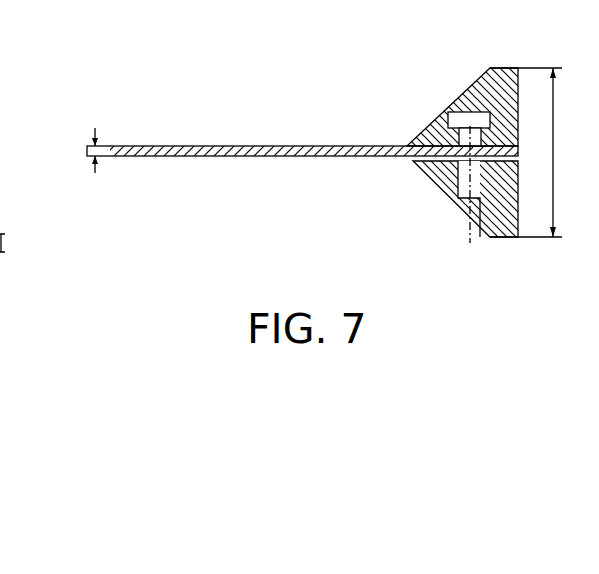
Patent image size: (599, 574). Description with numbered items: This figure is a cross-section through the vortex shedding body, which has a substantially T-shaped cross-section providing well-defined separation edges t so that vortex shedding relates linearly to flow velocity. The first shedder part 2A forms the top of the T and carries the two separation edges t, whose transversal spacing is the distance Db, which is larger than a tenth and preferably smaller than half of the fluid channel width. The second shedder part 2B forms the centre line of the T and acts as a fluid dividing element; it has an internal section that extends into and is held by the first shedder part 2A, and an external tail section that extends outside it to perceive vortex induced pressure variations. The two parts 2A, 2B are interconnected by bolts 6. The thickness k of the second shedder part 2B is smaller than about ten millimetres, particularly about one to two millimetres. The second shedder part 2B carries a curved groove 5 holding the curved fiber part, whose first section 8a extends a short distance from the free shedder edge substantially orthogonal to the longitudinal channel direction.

The first shedder part 2A is at (497, 238).
The second shedder part 2B is at (247, 157).
The curved groove 5 is at (302, 121).
The first section of the curved fiber part 8a is at (146, 148).
The bolt 6 is at (462, 112).
The thickness of the second shedder body part k is at (86, 151).
The separation edge t is at (517, 68).
The distance between the two vortex separation edges Db is at (552, 152).